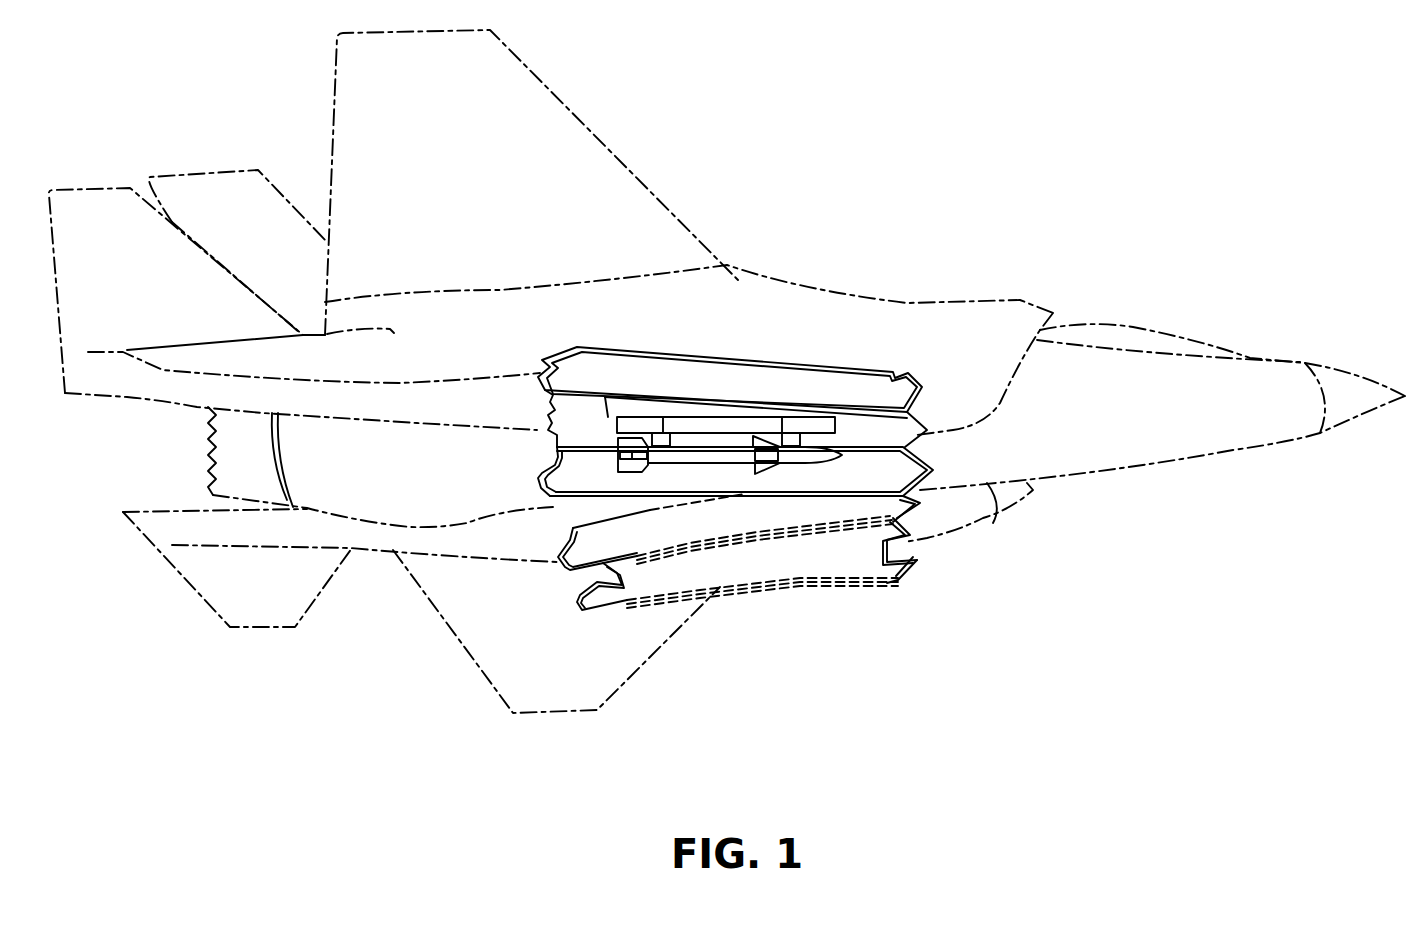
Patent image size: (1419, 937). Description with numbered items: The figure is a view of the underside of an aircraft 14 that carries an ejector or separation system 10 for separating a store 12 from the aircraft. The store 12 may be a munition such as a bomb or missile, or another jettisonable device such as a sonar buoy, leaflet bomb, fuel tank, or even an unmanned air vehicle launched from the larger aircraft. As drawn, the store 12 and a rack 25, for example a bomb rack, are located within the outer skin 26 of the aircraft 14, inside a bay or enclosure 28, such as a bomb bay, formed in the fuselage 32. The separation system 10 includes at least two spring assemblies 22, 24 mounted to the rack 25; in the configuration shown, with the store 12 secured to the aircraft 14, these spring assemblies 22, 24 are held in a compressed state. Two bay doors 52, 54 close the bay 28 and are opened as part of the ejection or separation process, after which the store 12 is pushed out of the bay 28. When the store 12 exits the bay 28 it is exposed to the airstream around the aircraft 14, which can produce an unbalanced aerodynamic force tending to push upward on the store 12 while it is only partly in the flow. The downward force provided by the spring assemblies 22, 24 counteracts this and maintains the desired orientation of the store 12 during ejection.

The ejector or separation system 10 is at (863, 433).
The store 12 is at (722, 455).
The aircraft 14 is at (868, 352).
The spring assembly 22 is at (666, 440).
The spring assembly 24 is at (787, 428).
The rack 25 is at (721, 420).
The outer skin 26 is at (525, 458).
The bay or enclosure 28 is at (893, 438).
The fuselage 32 is at (673, 517).
The bay door 52 is at (680, 370).
The bay door 54 is at (837, 477).